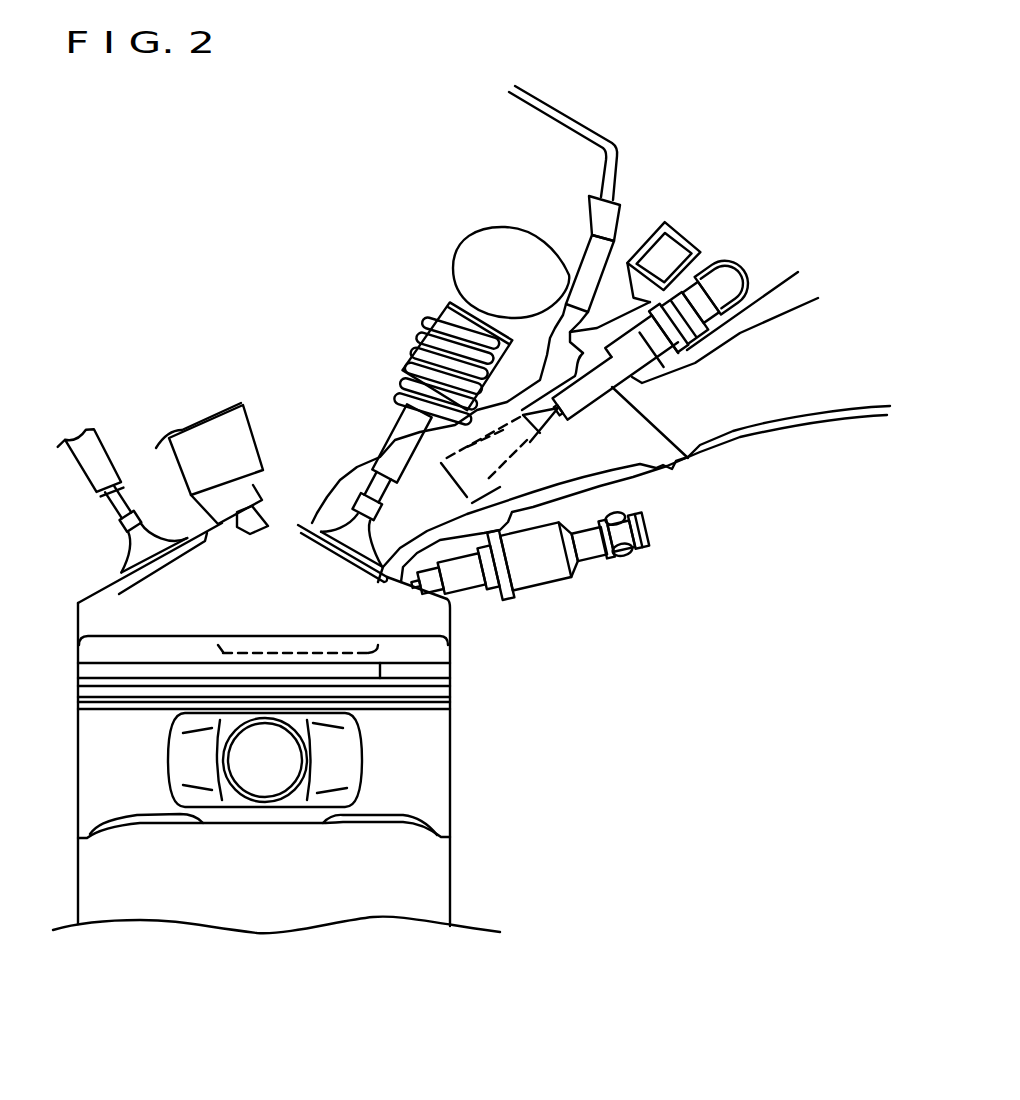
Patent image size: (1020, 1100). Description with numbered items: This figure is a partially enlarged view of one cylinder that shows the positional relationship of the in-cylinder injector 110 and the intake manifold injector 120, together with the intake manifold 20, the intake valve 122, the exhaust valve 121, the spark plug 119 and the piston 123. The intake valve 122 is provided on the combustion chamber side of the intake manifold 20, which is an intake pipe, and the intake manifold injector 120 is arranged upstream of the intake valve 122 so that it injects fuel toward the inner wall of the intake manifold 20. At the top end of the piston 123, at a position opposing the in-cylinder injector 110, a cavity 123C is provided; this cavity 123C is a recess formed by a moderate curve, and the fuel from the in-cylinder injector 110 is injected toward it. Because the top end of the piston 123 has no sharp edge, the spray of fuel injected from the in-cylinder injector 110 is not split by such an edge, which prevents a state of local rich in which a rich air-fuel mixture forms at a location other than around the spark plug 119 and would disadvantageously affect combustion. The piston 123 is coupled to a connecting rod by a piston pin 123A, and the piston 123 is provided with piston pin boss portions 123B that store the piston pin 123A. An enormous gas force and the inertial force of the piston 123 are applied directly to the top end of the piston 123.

The intake manifold 20 is at (732, 411).
The in-cylinder injector 110 is at (553, 580).
The spark plug 119 is at (245, 440).
The intake manifold injector 120 is at (593, 400).
The exhaust valve 121 is at (155, 562).
The intake valve 122 is at (323, 541).
The piston 123 is at (433, 760).
The piston pin 123A is at (290, 777).
The piston pin boss portions 123B is at (232, 800).
The cavity 123C is at (330, 640).